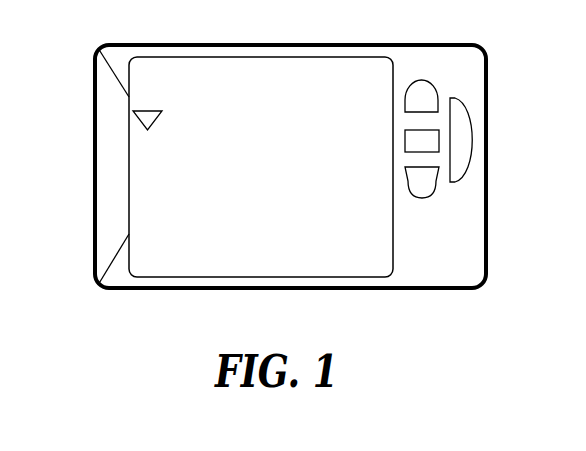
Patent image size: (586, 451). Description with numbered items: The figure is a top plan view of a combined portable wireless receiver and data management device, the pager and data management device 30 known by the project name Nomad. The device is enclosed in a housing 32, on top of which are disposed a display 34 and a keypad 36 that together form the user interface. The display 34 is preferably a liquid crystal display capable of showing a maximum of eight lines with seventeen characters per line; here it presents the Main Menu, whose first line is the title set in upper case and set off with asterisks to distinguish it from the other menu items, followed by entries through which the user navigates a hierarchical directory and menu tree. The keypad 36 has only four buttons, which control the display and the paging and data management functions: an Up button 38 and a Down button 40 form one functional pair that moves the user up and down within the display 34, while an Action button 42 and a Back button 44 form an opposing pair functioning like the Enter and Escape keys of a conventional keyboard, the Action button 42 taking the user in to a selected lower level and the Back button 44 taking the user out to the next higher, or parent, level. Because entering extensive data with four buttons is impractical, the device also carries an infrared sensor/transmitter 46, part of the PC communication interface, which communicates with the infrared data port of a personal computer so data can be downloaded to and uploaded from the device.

The pager and data management device 30 is at (487, 308).
The housing 32 is at (488, 62).
The display 34 is at (314, 57).
The keypad 36 is at (416, 163).
The Up button 38 is at (438, 94).
The Down button 40 is at (430, 190).
The Action button 42 is at (405, 142).
The Back button 44 is at (473, 136).
The infrared sensor/transmitter 46 is at (93, 170).